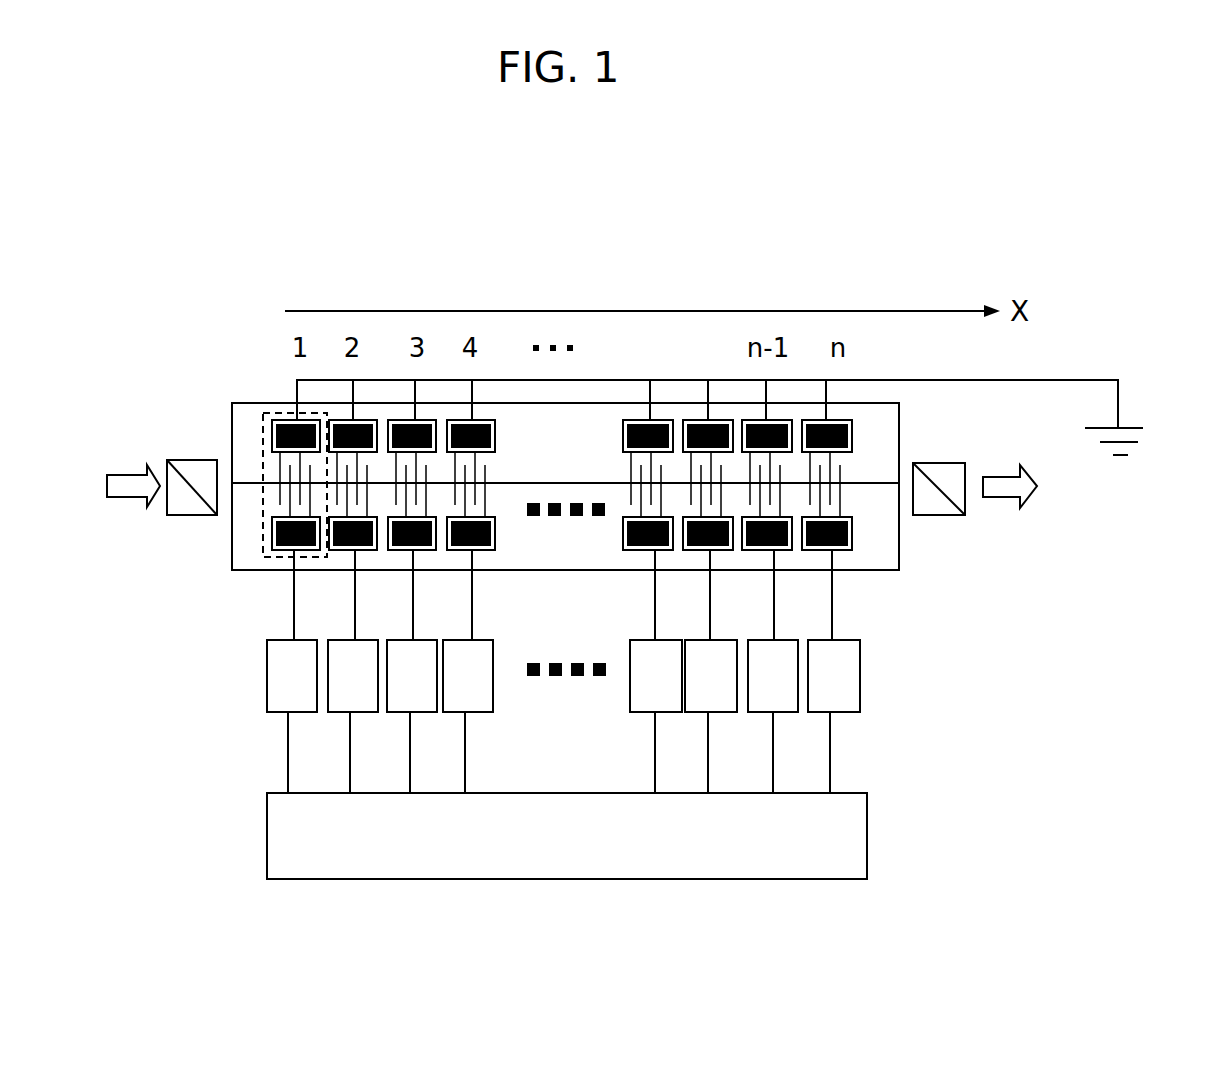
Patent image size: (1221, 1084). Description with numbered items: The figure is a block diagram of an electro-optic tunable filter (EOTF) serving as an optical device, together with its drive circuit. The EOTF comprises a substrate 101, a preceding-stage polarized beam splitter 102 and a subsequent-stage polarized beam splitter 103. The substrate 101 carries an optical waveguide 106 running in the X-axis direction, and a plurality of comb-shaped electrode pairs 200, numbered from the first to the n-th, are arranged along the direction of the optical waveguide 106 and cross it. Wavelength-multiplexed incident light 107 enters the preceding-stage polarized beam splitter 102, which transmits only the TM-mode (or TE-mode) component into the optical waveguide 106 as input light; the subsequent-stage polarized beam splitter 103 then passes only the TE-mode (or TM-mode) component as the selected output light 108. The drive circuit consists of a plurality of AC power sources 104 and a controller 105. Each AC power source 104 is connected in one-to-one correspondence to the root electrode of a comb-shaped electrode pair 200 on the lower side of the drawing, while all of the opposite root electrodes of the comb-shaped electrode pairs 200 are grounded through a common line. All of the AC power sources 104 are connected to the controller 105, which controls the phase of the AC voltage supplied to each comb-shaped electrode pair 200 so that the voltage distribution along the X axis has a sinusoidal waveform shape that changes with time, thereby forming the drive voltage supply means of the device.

The substrate 101 is at (270, 403).
The preceding-stage polarized beam splitter 102 is at (194, 516).
The subsequent-stage polarized beam splitter 103 is at (940, 516).
The AC power sources 104 is at (455, 712).
The controller 105 is at (565, 880).
The optical waveguide 106 is at (567, 483).
The incident light 107 is at (135, 475).
The output light 108 is at (1003, 498).
The comb-shaped electrode pairs 200 is at (656, 431).